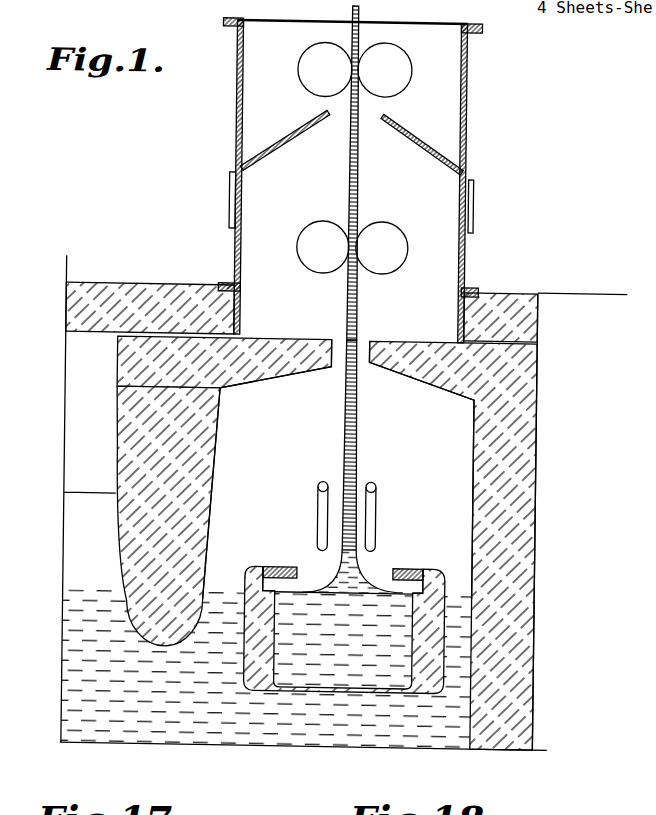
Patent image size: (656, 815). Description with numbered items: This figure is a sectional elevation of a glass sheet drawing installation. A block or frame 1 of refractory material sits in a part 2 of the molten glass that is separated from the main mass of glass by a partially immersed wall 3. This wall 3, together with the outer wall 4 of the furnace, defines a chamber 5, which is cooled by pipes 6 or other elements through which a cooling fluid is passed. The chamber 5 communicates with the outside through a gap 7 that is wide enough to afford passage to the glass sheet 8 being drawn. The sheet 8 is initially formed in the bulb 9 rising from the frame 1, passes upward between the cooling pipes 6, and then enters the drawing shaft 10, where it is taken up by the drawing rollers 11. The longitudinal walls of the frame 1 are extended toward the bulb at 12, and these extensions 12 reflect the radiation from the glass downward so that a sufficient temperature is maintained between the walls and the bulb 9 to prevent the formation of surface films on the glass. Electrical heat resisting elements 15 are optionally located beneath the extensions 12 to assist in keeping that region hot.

The block or frame of refractory material 1 is at (431, 630).
The part of the molten glass 2 is at (346, 722).
The partially immersed wall 3 is at (137, 552).
The outer wall of the furnace 4 is at (514, 488).
The chamber 5 is at (419, 447).
The cooling pipes 6 is at (379, 504).
The gap 7 is at (355, 338).
The glass sheet 8 is at (346, 425).
The bulb 9 is at (365, 580).
The drawing shaft 10 is at (438, 276).
The drawing rollers 11 is at (395, 247).
The extensions of the frame walls 12 is at (417, 568).
The electrical heat resisting elements 15 is at (275, 585).